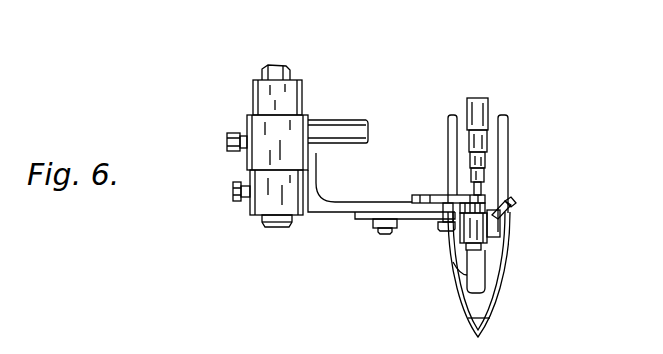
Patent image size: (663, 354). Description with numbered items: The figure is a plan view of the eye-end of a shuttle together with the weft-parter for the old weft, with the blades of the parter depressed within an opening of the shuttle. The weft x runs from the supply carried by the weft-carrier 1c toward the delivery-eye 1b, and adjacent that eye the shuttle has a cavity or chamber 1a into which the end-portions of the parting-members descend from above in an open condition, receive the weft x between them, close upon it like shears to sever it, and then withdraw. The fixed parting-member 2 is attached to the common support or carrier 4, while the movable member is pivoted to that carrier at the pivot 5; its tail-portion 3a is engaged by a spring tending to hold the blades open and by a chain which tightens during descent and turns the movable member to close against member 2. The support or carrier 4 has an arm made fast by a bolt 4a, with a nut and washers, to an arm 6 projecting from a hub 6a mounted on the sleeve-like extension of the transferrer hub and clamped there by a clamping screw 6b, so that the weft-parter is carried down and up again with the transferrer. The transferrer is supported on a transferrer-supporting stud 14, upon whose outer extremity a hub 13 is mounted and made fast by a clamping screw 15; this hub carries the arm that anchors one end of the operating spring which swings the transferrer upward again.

The hub 6a is at (301, 121).
The clamping screw 6b is at (226, 141).
The arm 6 is at (342, 203).
The clamping screw 15 is at (232, 194).
The hub 13 is at (257, 215).
The transferrer-supporting stud 14 is at (275, 229).
The support or carrier 4 is at (410, 220).
The bolt 4a is at (383, 234).
The tail-portion 3a is at (441, 196).
The parting-member 2 is at (468, 209).
The weft-carrier 1c is at (488, 155).
The weft x is at (477, 190).
The cavity or chamber 1a is at (492, 222).
The pivot 5 is at (483, 262).
The delivery-eye 1b is at (462, 273).